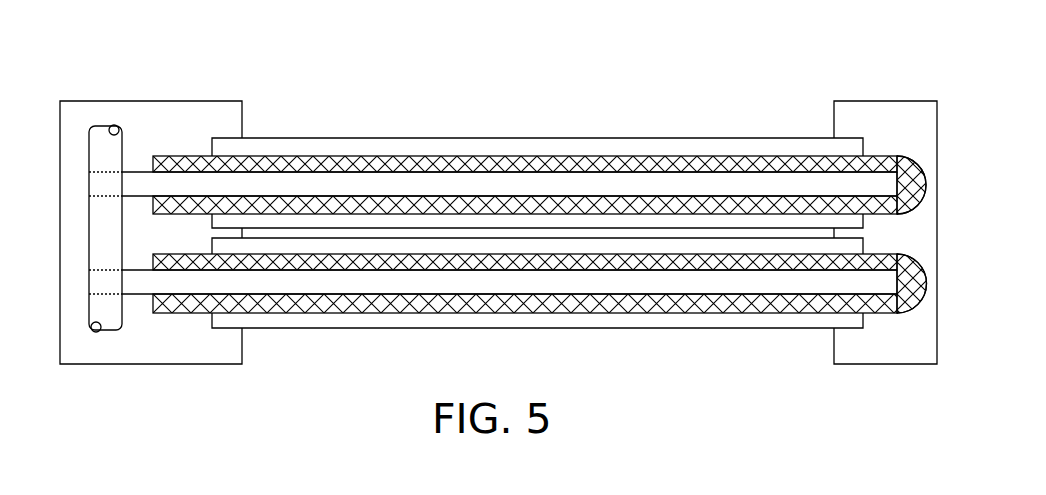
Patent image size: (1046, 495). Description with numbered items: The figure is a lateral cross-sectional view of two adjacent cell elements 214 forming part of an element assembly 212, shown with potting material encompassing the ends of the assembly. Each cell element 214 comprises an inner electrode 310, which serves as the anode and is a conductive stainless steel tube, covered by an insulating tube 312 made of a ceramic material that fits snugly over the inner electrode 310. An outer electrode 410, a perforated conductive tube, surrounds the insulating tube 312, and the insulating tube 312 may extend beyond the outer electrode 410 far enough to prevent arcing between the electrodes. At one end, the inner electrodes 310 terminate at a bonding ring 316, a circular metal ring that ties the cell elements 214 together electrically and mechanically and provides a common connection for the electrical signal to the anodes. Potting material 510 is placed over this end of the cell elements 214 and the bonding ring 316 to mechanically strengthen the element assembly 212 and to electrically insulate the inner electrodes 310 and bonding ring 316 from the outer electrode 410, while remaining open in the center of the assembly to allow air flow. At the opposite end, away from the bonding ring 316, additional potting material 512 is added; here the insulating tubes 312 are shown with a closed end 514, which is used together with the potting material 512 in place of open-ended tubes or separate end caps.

The element assembly 212 is at (533, 130).
The cell element 214 is at (495, 132).
The inner electrode 310 is at (776, 171).
The insulating tube 312 is at (700, 157).
The bonding ring 316 is at (122, 146).
The outer electrode 410 is at (580, 138).
The potting material 510 is at (93, 101).
The potting material 512 is at (865, 101).
The closed end 514 is at (909, 157).